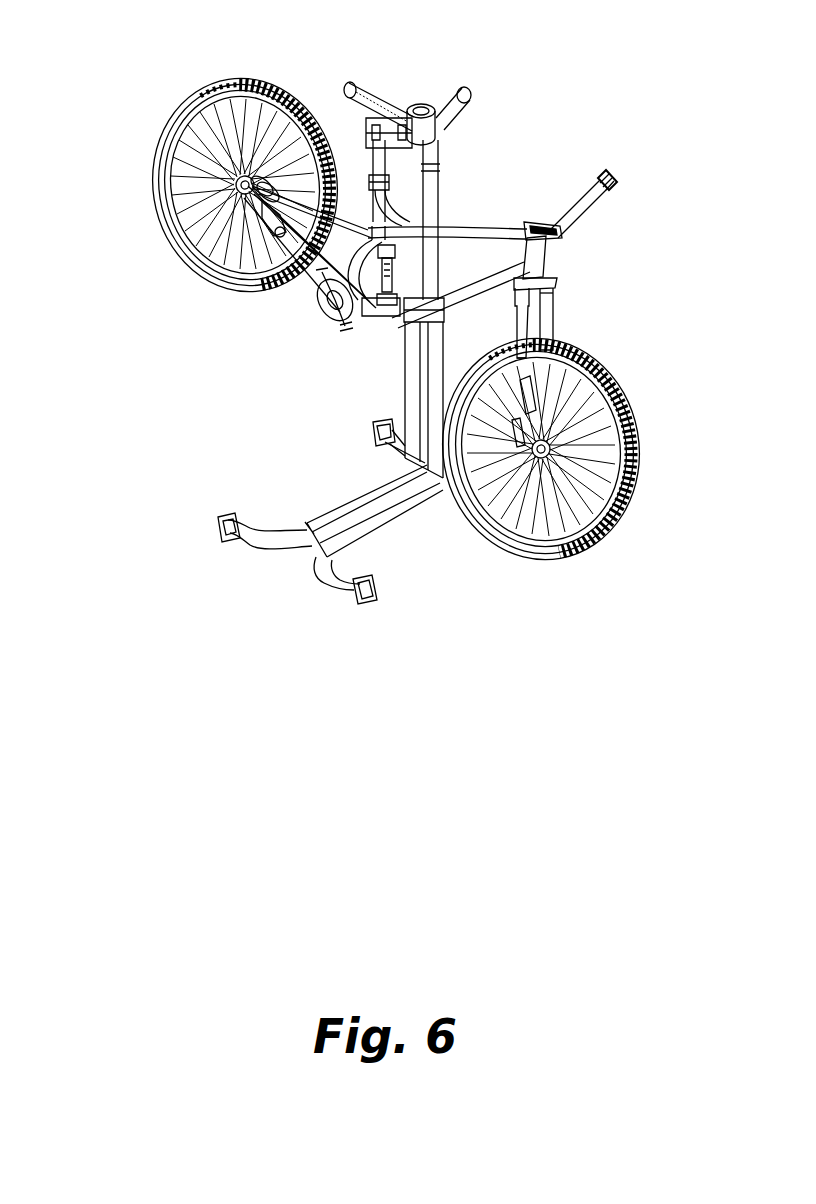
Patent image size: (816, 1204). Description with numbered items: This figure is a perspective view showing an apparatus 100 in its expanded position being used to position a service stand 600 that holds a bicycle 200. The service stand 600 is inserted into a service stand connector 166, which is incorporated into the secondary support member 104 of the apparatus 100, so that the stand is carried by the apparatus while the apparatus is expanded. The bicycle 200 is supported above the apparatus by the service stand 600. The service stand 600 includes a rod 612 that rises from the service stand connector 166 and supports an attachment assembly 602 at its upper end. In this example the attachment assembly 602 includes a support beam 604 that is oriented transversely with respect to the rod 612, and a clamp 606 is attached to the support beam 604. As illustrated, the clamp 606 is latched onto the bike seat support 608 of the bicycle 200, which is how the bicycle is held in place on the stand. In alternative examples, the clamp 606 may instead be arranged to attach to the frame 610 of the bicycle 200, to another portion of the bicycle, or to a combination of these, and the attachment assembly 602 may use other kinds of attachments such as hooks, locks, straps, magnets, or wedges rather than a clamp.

The service stand 600 is at (618, 72).
The bicycle 200 is at (99, 119).
The apparatus 100 is at (252, 442).
The secondary support member 104 is at (415, 358).
The service stand connector 166 is at (433, 309).
The attachment assembly 602 is at (383, 69).
The support beam 604 is at (434, 104).
The clamp 606 is at (340, 119).
The bike seat support 608 is at (371, 158).
The frame 610 is at (478, 231).
The rod 612 is at (440, 168).